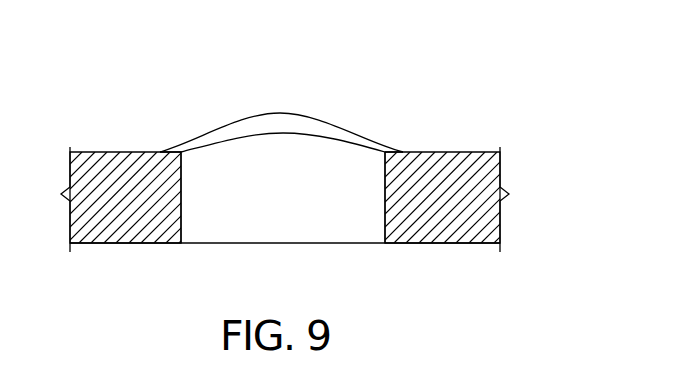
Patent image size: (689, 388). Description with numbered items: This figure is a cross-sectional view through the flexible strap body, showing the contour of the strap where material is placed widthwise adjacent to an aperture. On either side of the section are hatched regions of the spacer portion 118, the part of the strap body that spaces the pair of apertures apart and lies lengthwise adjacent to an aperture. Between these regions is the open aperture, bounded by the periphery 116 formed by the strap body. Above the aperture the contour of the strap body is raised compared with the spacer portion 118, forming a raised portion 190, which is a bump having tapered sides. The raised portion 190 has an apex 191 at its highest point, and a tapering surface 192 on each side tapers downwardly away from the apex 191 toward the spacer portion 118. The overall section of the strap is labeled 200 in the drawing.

The spacer portion 118 is at (102, 174).
The periphery 116 is at (332, 162).
The raised portion 190 is at (281, 80).
The apex 191 is at (287, 113).
The tapering surface 192 is at (184, 133).
The device 200 is at (557, 68).